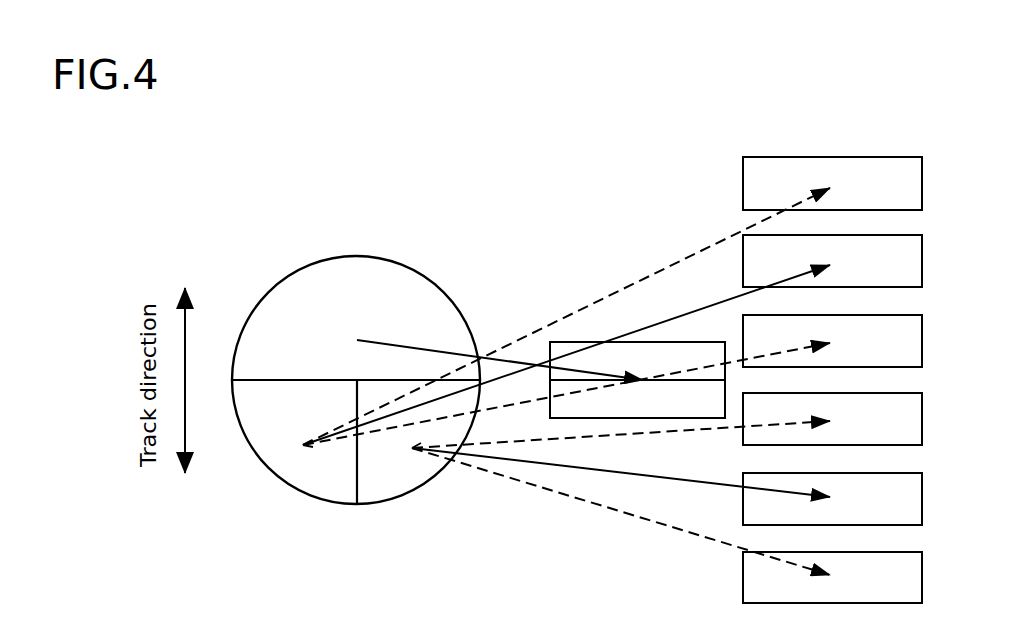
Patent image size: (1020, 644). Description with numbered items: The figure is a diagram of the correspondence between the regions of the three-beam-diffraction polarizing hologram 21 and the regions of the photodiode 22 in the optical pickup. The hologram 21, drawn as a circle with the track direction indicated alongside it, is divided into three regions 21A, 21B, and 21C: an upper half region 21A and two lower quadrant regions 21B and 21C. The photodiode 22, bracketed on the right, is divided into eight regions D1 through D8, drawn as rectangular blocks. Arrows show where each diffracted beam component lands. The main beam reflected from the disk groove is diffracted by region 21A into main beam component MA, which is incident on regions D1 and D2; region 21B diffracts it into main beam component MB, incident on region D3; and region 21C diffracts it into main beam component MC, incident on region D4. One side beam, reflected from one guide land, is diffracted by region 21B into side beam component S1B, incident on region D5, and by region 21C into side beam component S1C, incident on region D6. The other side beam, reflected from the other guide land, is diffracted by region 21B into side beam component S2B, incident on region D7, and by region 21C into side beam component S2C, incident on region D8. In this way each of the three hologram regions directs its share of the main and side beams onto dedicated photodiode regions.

The three-beam-diffraction polarizing hologram 21 is at (368, 363).
The region of the three-beam-diffraction polarizing hologram 21A is at (320, 285).
The region of the three-beam-diffraction polarizing hologram 21B is at (315, 480).
The region of the three-beam-diffraction polarizing hologram 21C is at (420, 478).
The photodiode 22 is at (736, 336).
The main beam component MA is at (430, 348).
The main beam component MB is at (640, 328).
The main beam component MC is at (630, 475).
The side beam component S1B is at (600, 299).
The side beam component S2B is at (460, 423).
The side beam component S1C is at (624, 432).
The side beam component S2C is at (565, 497).
The region of the photodiode D1 is at (637, 360).
The region of the photodiode D2 is at (637, 399).
The region of the photodiode D3 is at (832, 261).
The region of the photodiode D4 is at (832, 499).
The region of the photodiode D5 is at (832, 183).
The region of the photodiode D6 is at (832, 419).
The region of the photodiode D7 is at (832, 341).
The region of the photodiode D8 is at (832, 577).